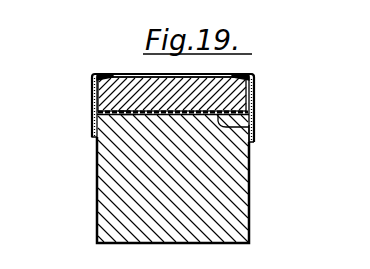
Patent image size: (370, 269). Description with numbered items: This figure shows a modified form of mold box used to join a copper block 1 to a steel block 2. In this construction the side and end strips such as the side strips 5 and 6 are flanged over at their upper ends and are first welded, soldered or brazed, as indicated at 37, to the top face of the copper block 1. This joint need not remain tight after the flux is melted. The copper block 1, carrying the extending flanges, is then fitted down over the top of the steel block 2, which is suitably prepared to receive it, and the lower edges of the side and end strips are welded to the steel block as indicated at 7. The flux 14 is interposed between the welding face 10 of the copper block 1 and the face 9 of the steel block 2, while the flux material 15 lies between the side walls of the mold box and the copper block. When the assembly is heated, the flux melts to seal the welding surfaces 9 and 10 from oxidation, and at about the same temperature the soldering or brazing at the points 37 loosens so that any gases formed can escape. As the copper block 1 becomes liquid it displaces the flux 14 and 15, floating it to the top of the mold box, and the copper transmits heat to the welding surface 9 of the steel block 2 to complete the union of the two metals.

The copper block 1 is at (236, 95).
The steel block 2 is at (240, 207).
The side strip 5 is at (93, 77).
The side strip 6 is at (252, 81).
The weld 7 is at (94, 137).
The face of steel block 9 is at (127, 112).
The welding face of copper block 10 is at (129, 116).
The flux 14 is at (255, 131).
The flux material 15 is at (96, 93).
The weld 37 is at (110, 73).